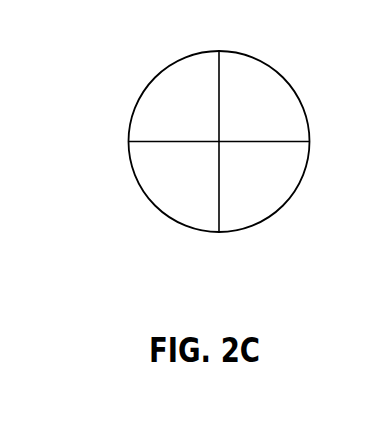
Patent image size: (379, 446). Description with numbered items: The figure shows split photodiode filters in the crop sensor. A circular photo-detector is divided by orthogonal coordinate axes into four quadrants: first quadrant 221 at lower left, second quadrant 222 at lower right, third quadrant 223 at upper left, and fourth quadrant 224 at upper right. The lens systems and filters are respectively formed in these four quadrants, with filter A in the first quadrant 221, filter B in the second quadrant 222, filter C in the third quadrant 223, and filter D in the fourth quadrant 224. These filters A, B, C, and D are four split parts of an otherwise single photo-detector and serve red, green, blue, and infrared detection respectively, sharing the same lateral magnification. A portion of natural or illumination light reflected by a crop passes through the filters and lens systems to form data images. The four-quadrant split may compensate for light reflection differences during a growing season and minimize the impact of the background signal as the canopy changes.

The quadrant 1 221 is at (183, 208).
The quadrant 2 222 is at (263, 205).
The quadrant 3 223 is at (183, 75).
The quadrant 4 224 is at (262, 73).